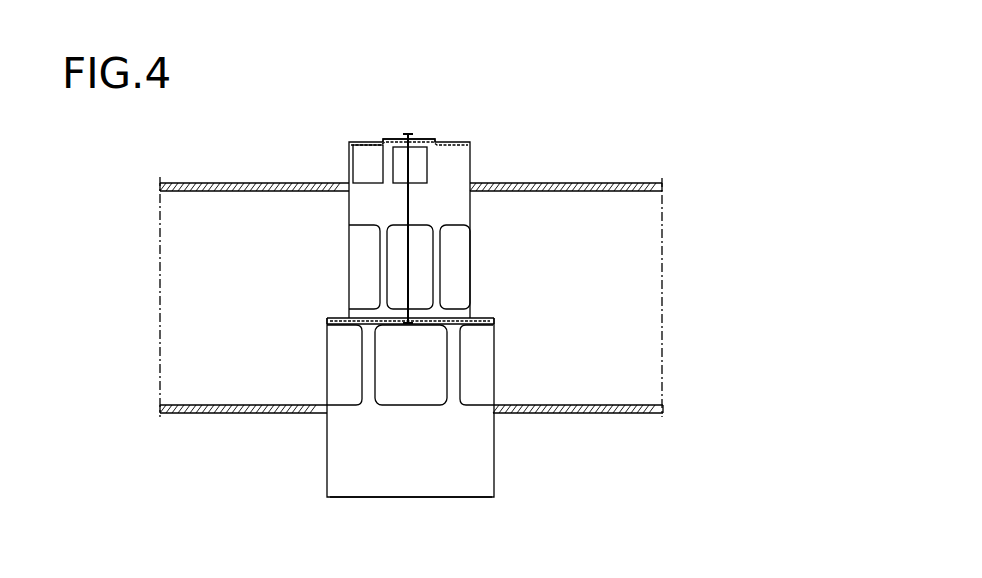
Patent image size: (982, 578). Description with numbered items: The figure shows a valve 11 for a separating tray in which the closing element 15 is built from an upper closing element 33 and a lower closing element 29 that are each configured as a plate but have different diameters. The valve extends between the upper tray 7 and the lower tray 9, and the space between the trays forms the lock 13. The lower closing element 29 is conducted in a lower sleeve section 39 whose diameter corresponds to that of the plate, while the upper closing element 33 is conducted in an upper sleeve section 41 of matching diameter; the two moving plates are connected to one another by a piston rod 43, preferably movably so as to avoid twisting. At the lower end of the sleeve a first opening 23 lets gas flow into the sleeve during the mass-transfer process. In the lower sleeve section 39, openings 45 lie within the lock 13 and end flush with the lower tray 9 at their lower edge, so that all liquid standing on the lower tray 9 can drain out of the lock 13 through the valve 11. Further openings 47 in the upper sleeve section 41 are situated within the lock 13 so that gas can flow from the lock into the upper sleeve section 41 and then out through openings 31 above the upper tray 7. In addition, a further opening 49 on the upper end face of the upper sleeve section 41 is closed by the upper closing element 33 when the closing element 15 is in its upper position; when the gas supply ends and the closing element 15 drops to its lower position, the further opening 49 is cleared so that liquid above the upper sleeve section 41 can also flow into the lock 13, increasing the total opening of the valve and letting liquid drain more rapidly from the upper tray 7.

The upper tray 7 is at (625, 184).
The lower tray 9 is at (563, 413).
The valve 11 is at (330, 172).
The lock 13 is at (185, 313).
The closing element 15 is at (408, 197).
The first opening 23 is at (415, 497).
The lower closing element 29 is at (480, 320).
The openings 31 is at (367, 168).
The upper closing element 33 is at (428, 141).
The lower sleeve section 39 is at (328, 450).
The upper sleeve section 41 is at (471, 213).
The piston rod 43 is at (412, 273).
The openings 45 is at (480, 378).
The further openings 47 is at (357, 277).
The further opening 49 is at (388, 140).